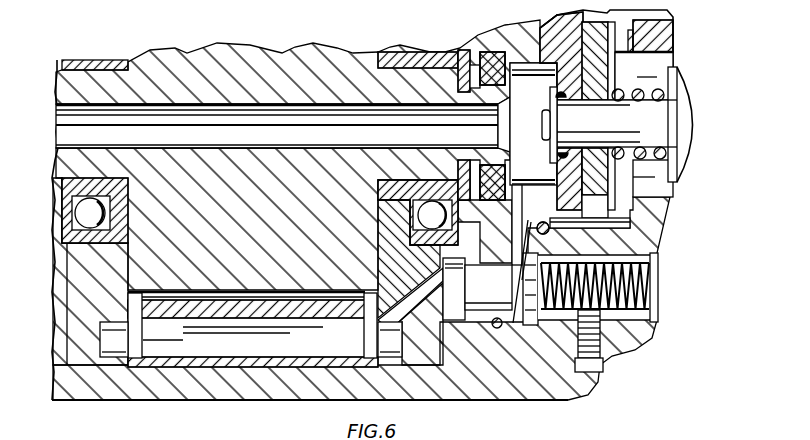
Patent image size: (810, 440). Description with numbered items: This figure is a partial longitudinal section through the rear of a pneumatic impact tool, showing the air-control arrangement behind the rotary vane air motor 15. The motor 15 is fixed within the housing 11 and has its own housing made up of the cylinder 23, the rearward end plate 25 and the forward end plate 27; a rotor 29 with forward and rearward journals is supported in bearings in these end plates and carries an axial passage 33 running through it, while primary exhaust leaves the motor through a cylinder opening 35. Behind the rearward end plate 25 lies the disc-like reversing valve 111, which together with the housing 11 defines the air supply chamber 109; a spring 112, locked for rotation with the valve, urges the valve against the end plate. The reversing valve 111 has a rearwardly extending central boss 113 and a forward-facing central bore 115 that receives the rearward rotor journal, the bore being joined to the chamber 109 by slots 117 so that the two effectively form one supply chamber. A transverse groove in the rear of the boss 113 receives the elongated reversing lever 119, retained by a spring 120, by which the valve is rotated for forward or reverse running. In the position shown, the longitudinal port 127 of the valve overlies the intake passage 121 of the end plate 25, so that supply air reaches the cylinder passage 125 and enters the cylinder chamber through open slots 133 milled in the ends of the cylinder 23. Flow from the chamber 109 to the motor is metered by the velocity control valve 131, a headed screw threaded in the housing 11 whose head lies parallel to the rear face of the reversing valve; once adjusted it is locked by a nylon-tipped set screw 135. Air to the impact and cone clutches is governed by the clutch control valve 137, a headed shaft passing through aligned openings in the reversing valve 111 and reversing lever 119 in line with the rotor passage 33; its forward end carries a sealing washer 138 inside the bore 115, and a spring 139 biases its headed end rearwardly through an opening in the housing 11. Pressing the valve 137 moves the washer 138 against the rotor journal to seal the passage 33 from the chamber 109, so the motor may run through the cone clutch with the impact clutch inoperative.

The housing 11 is at (91, 403).
The rotary vane air motor 15 is at (64, 298).
The cylinder 23 is at (185, 363).
The rearward end plate 25 is at (426, 364).
The forward end plate 27 is at (85, 358).
The rotor 29 is at (275, 70).
The axial passage 33 is at (83, 131).
The cylinder opening 35 is at (159, 437).
The air supply chamber 109 is at (546, 247).
The reversing valve 111 is at (453, 324).
The spring 112 is at (520, 298).
The central boss 113 is at (582, 28).
The central bore 115 is at (506, 117).
The slots 117 is at (520, 26).
The reversing lever 119 is at (598, 33).
The spring 120 is at (624, 45).
The intake passage 121 is at (402, 292).
The cylinder passage 125 is at (279, 356).
The longitudinal port 127 is at (480, 306).
The velocity control valve 131 is at (530, 323).
The open slots 133 is at (136, 318).
The set screw 135 is at (600, 348).
The clutch control valve 137 is at (655, 123).
The sealing washer 138 is at (558, 112).
The spring 139 is at (644, 160).